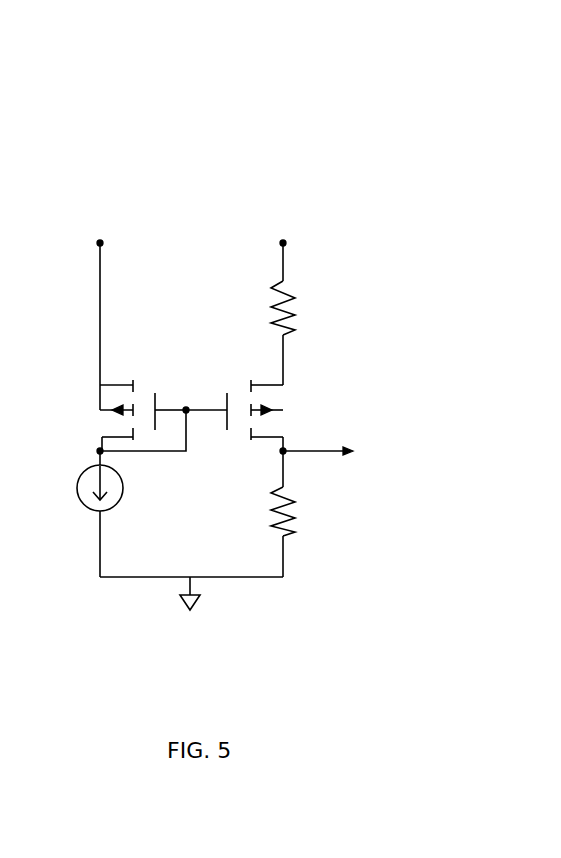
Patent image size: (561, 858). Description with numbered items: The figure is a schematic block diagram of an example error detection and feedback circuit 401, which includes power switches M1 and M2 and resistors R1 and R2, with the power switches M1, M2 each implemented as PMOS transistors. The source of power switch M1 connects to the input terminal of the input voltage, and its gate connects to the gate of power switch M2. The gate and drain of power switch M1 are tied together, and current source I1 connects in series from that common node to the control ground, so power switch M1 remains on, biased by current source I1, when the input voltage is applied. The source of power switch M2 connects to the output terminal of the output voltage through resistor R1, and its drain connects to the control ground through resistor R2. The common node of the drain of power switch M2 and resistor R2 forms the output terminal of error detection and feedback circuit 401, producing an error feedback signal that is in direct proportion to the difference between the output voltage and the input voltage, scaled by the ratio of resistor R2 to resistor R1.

The error detection and feedback circuit 401 is at (372, 67).
The power switch M1 is at (143, 403).
The power switch M2 is at (234, 403).
The resistor R1 is at (299, 308).
The resistor R2 is at (303, 511).
The current source I1 is at (87, 488).